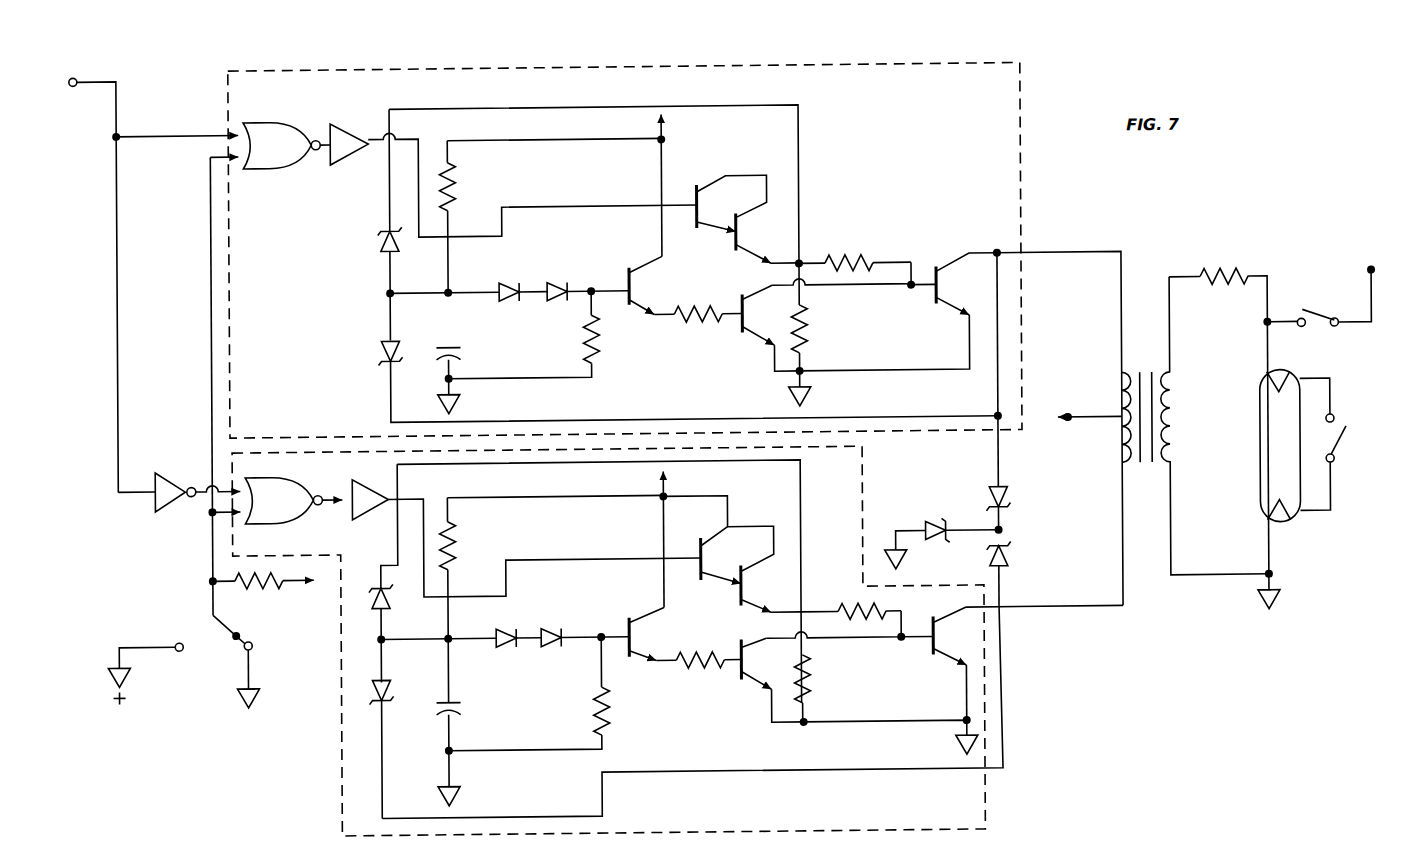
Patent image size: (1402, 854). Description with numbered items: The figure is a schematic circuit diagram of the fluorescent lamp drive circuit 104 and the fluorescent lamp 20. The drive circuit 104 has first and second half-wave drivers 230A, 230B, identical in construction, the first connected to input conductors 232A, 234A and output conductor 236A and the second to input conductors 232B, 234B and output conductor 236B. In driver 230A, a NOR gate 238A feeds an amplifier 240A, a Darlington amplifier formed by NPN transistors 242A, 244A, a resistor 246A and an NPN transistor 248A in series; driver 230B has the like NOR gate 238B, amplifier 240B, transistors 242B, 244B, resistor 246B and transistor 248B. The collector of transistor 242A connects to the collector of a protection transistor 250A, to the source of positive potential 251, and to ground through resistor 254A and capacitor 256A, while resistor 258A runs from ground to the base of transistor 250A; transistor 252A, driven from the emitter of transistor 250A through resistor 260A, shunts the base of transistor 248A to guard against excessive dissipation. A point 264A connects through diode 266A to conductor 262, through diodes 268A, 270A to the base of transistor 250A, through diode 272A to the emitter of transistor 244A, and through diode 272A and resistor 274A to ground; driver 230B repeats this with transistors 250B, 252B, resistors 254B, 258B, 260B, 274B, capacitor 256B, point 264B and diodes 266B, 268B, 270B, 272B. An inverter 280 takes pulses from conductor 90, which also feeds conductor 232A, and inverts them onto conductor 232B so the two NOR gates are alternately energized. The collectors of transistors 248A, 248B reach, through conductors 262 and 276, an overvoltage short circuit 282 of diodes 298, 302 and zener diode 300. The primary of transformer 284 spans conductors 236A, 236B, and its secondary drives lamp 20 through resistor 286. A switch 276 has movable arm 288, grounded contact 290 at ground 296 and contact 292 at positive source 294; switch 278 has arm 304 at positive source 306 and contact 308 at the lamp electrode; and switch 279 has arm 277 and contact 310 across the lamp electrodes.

The fluorescent lamp 20 is at (1286, 380).
The conductor 90 is at (100, 79).
The fluorescent lamp drive circuit 104 is at (1006, 44).
The first half-wave driver 230A is at (300, 96).
The second half-wave driver 230B is at (350, 650).
The input conductor 232A is at (208, 132).
The input conductor 232B is at (200, 480).
The input conductor 234A is at (212, 152).
The input conductor 234B is at (212, 514).
The output conductor 236A is at (1072, 256).
The output conductor 236B is at (1074, 614).
The NOR gate 238A is at (268, 160).
The NOR gate 238B is at (276, 484).
The amplifier 240A is at (344, 126).
The amplifier 240B is at (350, 520).
The NPN transistor 242A is at (695, 192).
The NPN transistor 242B is at (698, 548).
The NPN transistor 244A is at (742, 250).
The NPN transistor 244B is at (746, 600).
The resistor 246A is at (850, 260).
The resistor 246B is at (858, 608).
The NPN transistor 248A is at (940, 298).
The NPN transistor 248B is at (936, 668).
The NPN transistor 250A is at (632, 304).
The NPN transistor 250B is at (616, 622).
The source of positive potential 251 is at (660, 118).
The NPN transistor 252A is at (741, 330).
The NPN transistor 252B is at (742, 680).
The resistor 254A is at (452, 190).
The resistor 254B is at (452, 540).
The capacitor 256A is at (462, 352).
The capacitor 256B is at (452, 712).
The resistor 258A is at (598, 358).
The resistor 258B is at (604, 718).
The resistor 260A is at (690, 306).
The resistor 260B is at (686, 658).
The conductor 262 is at (1002, 452).
The point 264A is at (386, 290).
The point 264B is at (384, 646).
The diode 266A is at (382, 353).
The diode 266B is at (386, 694).
The diode 268A is at (512, 280).
The diode 268B is at (508, 626).
The diode 270A is at (557, 280).
The diode 270B is at (536, 628).
The diode 272A is at (382, 240).
The diode 272B is at (386, 610).
The resistor 274A is at (806, 326).
The resistor 274B is at (802, 674).
The conductor 276 is at (1006, 610).
The switch arm 277 is at (1344, 444).
The second switch 278 is at (1312, 282).
The third switch 279 is at (1338, 462).
The inverter 280 is at (154, 498).
The overvoltage short circuit 282 is at (1002, 533).
The transformer 284 is at (1180, 428).
The resistor 286 is at (1226, 276).
The movable switch arm 288 is at (222, 620).
The first stationary contact 290 is at (253, 640).
The second stationary contact 292 is at (179, 646).
The source of positive potential 294 is at (118, 656).
The ground 296 is at (258, 688).
The first diode 298 is at (1004, 500).
The zener diode 300 is at (932, 528).
The second diode 302 is at (1004, 570).
The movable switch arm 304 is at (1316, 322).
The source of positive potential 306 is at (1368, 284).
The stationary contact 308 is at (1338, 334).
The stationary contact 310 is at (1334, 420).